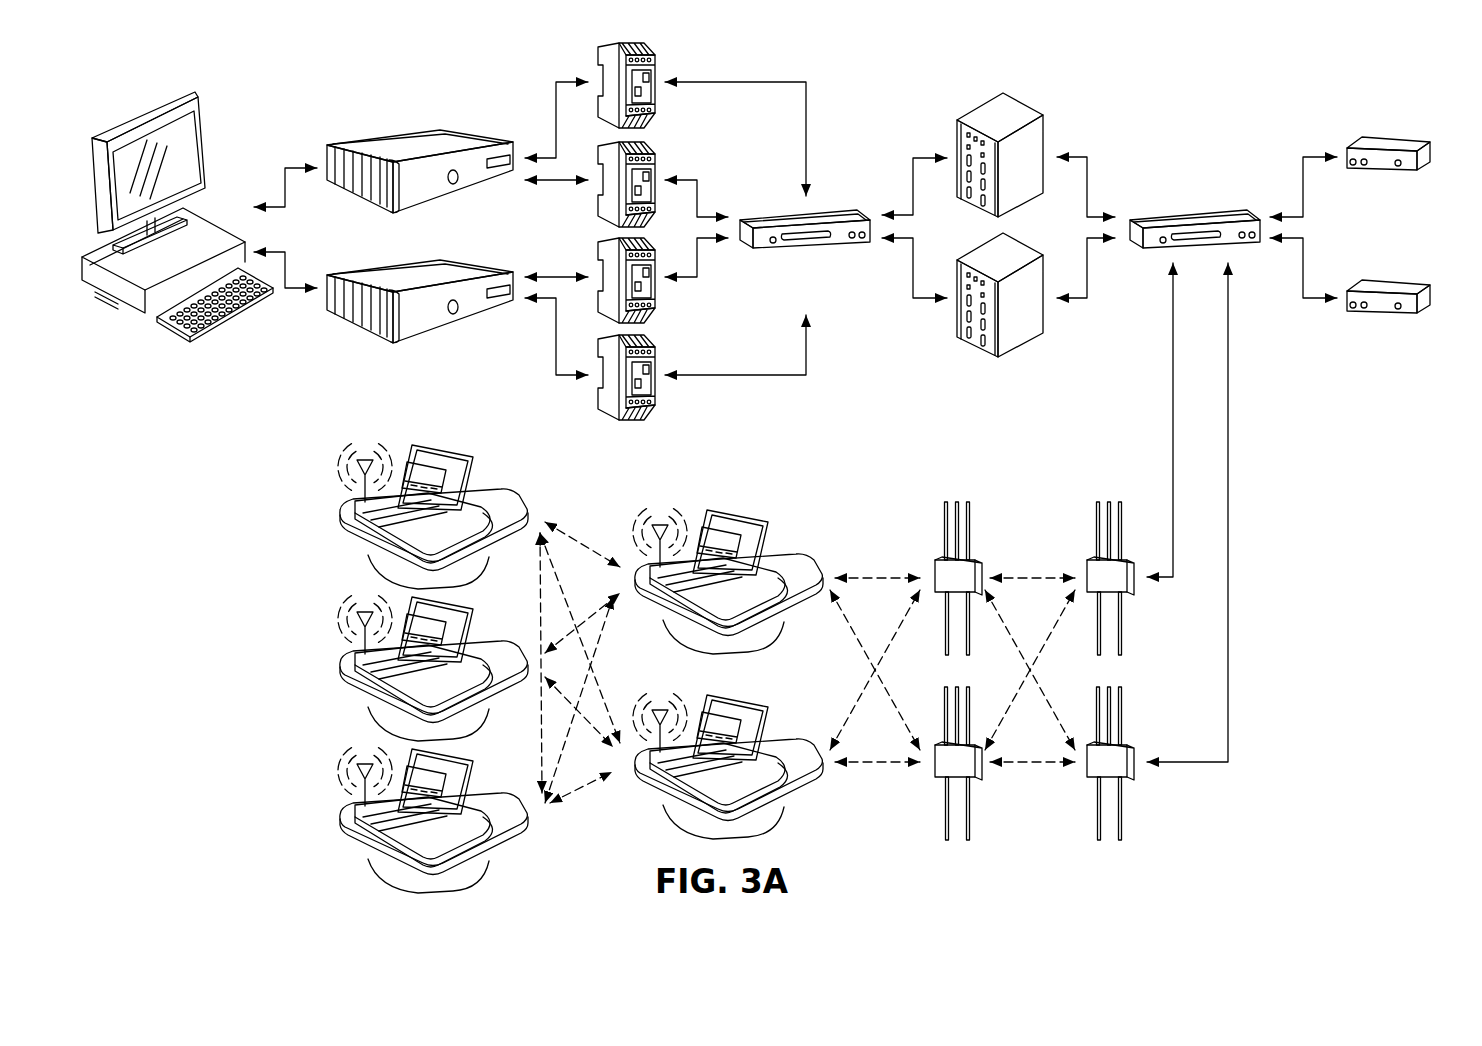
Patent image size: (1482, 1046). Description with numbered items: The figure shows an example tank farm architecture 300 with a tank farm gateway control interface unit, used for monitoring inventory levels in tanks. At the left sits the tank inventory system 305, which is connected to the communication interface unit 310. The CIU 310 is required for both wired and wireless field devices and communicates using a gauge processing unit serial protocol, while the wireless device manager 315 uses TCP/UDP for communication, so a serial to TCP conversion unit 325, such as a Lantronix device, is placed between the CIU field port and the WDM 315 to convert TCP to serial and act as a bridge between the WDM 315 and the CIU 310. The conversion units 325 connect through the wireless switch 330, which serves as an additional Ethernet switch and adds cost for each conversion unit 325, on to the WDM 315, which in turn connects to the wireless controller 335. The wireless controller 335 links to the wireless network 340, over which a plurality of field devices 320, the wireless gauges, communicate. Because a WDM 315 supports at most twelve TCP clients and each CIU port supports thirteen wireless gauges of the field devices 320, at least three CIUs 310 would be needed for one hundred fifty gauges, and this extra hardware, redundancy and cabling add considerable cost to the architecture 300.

The tank farm architecture 300 is at (1210, 97).
The tank inventory system 305 is at (142, 115).
The communication interface unit 310 is at (390, 134).
The wireless device manager 315 is at (1022, 108).
The field devices 320 is at (740, 513).
The serial to TCP conversion unit 325 is at (598, 58).
The wireless switch 330 is at (770, 215).
The wireless controller 335 is at (1187, 212).
The wireless network 340 is at (1097, 528).